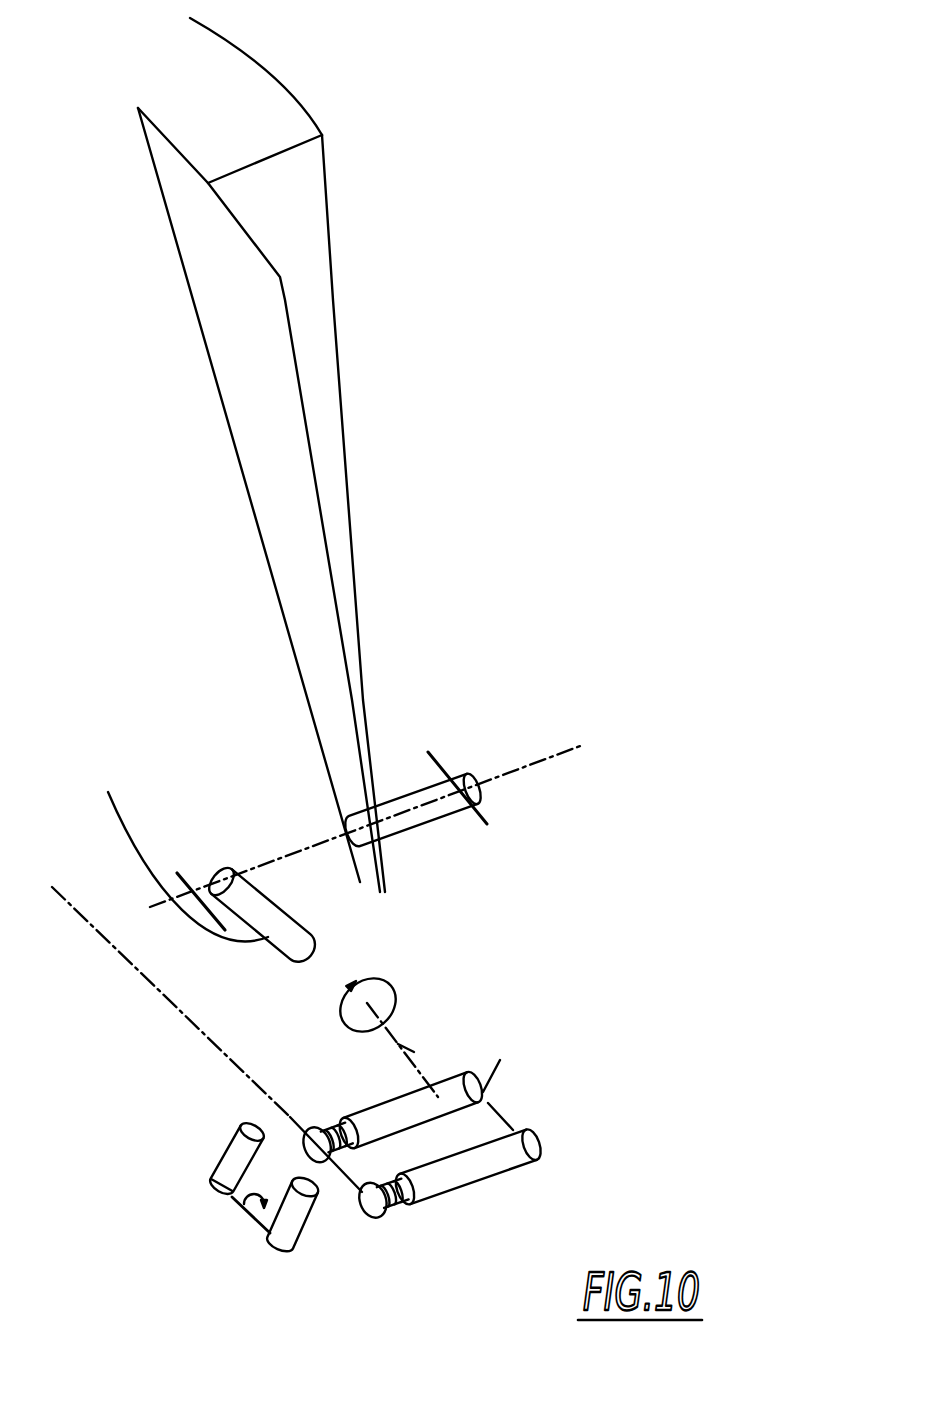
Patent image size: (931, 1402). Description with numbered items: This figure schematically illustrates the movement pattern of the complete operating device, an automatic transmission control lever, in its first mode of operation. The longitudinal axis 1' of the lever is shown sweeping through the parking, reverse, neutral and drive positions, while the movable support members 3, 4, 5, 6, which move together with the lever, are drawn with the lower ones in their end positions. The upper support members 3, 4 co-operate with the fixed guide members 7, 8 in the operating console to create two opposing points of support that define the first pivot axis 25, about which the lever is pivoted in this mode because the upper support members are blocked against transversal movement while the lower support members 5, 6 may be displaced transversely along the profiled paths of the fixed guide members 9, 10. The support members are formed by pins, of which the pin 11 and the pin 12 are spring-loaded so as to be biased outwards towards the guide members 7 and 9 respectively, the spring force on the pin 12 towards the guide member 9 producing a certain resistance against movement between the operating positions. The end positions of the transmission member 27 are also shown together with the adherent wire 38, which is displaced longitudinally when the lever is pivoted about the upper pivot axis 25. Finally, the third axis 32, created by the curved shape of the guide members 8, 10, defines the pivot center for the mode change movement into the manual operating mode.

The longitudinal axis of the lever 1' is at (277, 446).
The movable support member 3 is at (297, 905).
The movable support member 4 is at (500, 812).
The movable support member 5 is at (312, 1229).
The movable support member 6 is at (495, 1182).
The fixed guide member 7 is at (186, 886).
The fixed guide member 8 is at (440, 760).
The fixed guide member 9 is at (238, 1200).
The fixed guide member 10 is at (503, 1107).
The pin 11 is at (178, 851).
The pin 12 is at (227, 1160).
The first pivot axis 25 is at (535, 760).
The transmission member 27 is at (362, 1192).
The third axis 32 is at (407, 1048).
The wire 38 is at (217, 1048).